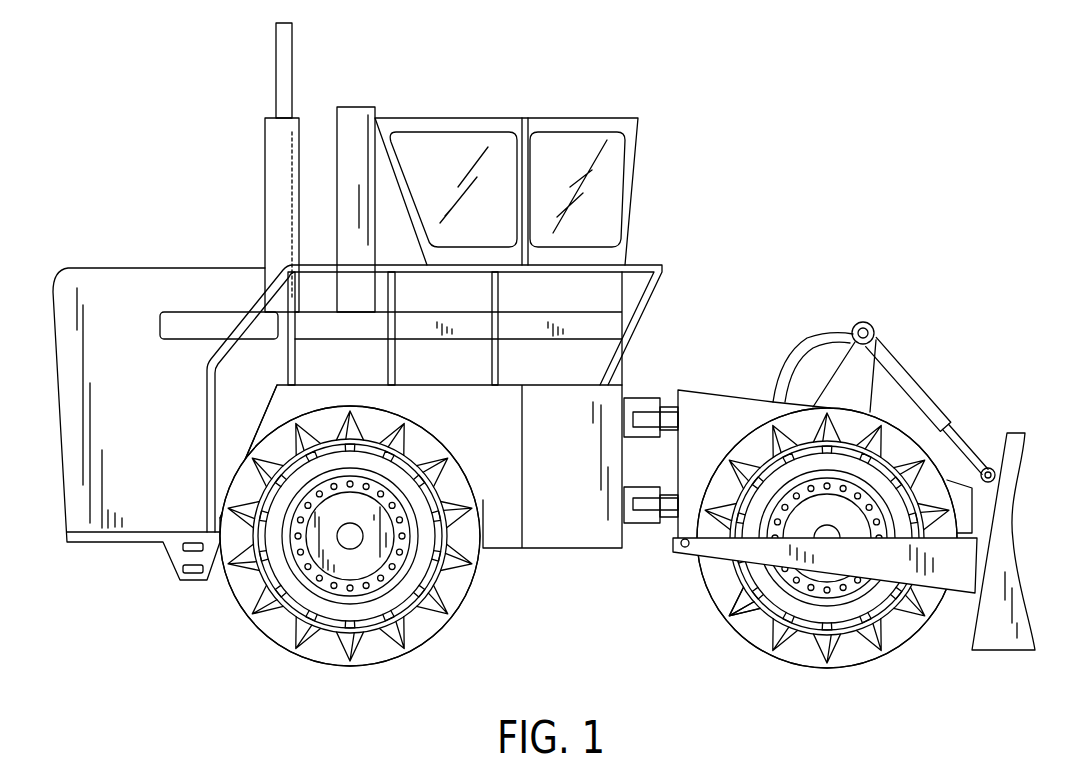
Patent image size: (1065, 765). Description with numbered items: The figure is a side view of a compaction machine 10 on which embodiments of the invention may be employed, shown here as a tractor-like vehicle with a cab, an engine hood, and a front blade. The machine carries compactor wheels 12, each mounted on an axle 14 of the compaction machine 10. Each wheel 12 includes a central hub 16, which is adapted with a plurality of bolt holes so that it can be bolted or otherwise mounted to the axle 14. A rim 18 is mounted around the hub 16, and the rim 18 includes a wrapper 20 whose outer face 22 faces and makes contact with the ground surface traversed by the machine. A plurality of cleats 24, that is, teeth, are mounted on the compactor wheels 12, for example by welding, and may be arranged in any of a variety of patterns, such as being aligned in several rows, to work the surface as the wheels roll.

The compaction machine 10 is at (706, 280).
The compactor wheels 12 is at (554, 562).
The axles 14 is at (362, 525).
The hub 16 is at (282, 617).
The rim 18 is at (252, 528).
The wrapper 20 is at (423, 627).
The outer face 22 is at (323, 643).
The cleats 24 is at (246, 584).